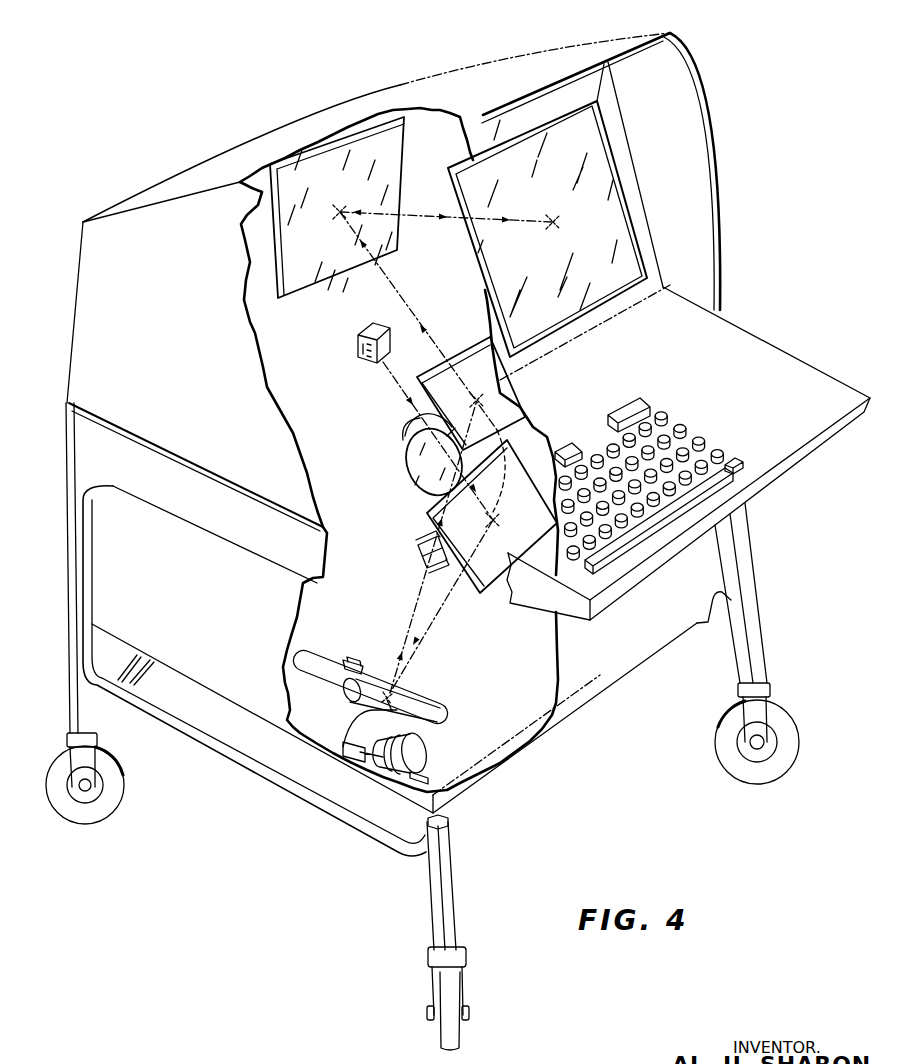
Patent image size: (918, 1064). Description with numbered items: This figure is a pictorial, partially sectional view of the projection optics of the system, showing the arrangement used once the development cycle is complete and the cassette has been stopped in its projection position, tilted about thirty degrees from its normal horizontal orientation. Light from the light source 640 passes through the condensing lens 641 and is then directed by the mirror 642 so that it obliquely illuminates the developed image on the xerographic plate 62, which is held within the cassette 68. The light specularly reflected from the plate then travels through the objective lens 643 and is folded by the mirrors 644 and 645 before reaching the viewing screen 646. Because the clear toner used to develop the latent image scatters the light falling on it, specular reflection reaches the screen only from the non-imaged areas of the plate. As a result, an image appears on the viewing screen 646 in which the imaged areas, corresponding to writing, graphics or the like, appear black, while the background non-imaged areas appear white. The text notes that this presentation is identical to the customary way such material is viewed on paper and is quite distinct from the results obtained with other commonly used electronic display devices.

The viewing screen 646 is at (617, 208).
The mirror 645 is at (305, 288).
The mirror 644 is at (467, 357).
The objective lens 643 is at (414, 548).
The mirror 642 is at (492, 585).
The condensing lens 641 is at (404, 451).
The light source 640 is at (359, 349).
The xerographic plate 62 is at (405, 681).
The cassette 68 is at (448, 722).